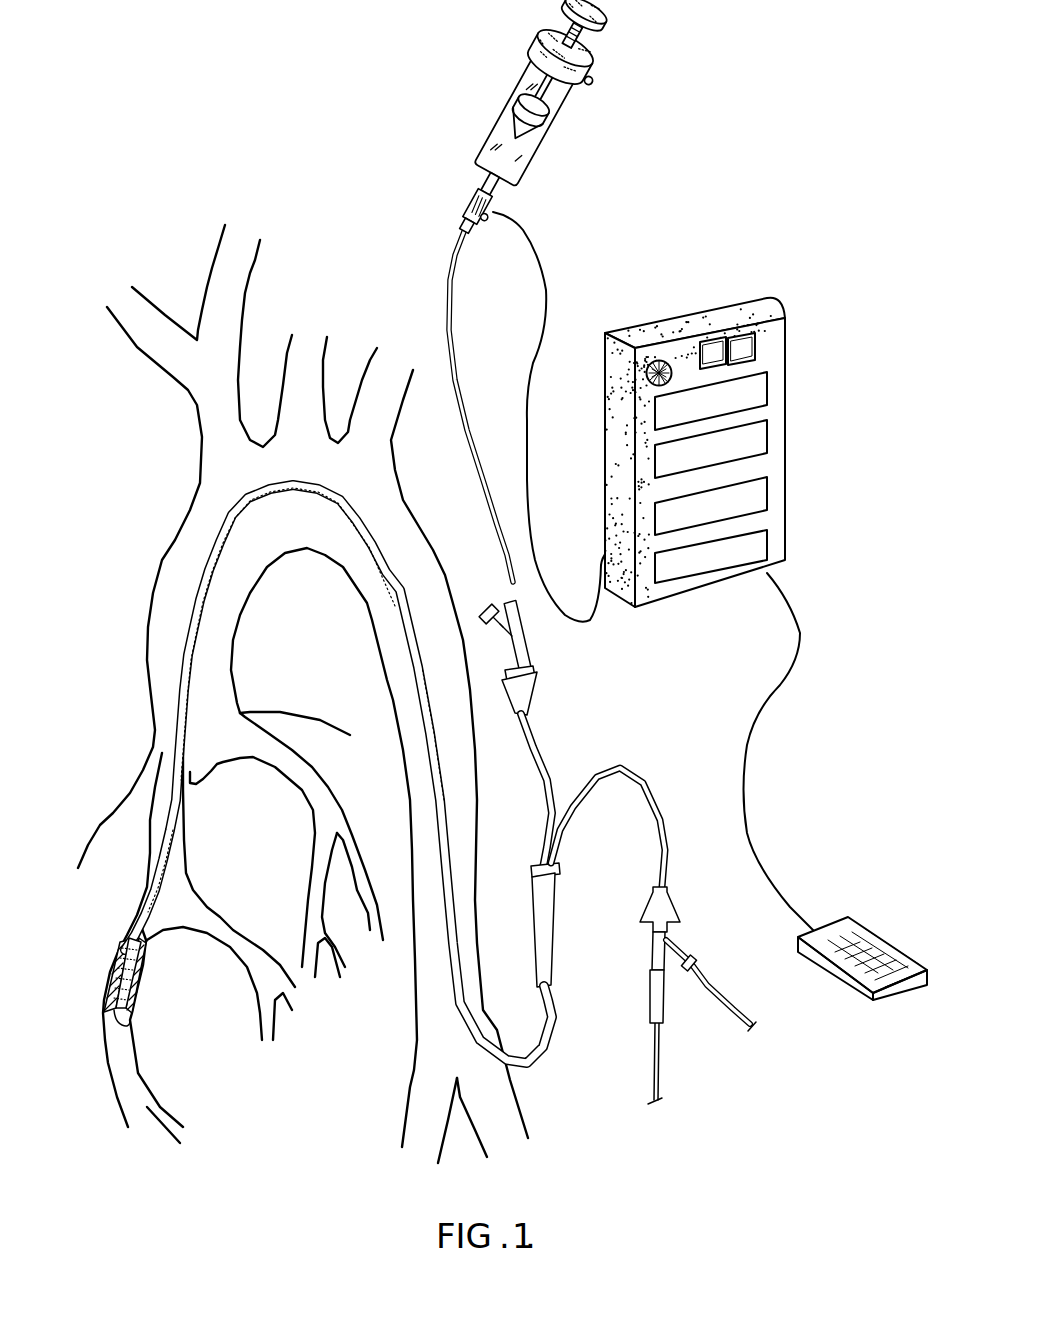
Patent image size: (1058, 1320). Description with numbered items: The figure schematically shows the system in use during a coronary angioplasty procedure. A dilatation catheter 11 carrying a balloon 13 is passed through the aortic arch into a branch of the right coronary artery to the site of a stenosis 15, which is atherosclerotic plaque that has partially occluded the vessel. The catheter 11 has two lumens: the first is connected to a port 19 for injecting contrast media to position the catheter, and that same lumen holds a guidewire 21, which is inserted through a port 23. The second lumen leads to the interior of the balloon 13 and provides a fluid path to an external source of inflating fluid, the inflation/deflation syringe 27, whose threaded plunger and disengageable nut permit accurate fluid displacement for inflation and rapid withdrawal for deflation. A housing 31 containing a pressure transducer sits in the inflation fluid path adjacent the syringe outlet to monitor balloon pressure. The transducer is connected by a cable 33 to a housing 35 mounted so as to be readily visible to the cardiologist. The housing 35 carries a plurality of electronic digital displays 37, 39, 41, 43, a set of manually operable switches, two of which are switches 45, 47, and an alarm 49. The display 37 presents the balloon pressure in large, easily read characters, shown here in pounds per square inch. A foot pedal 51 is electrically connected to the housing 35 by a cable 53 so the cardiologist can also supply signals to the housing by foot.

The dilatation catheter 11 is at (555, 1013).
The balloon 13 is at (145, 940).
The stenosis 15 is at (108, 980).
The port 19 is at (763, 1043).
The guidewire 21 is at (130, 1023).
The port 23 is at (664, 1030).
The inflation/deflation syringe 27 is at (543, 133).
The housing 31 is at (470, 207).
The cable 33 is at (547, 307).
The housing 35 is at (668, 603).
The display 37 is at (704, 386).
The display 39 is at (767, 430).
The display 41 is at (767, 487).
The display 43 is at (767, 537).
The switch 45 is at (710, 342).
The switch 47 is at (743, 335).
The alarm 49 is at (665, 353).
The foot pedal 51 is at (867, 933).
The cable 53 is at (763, 707).